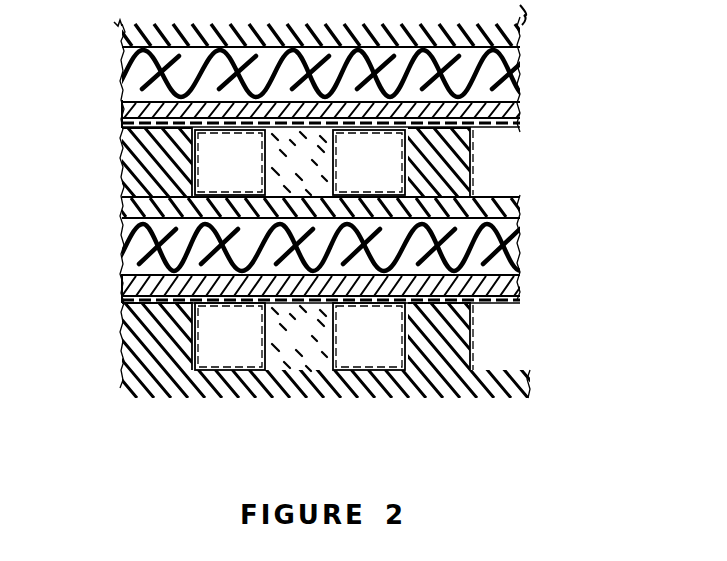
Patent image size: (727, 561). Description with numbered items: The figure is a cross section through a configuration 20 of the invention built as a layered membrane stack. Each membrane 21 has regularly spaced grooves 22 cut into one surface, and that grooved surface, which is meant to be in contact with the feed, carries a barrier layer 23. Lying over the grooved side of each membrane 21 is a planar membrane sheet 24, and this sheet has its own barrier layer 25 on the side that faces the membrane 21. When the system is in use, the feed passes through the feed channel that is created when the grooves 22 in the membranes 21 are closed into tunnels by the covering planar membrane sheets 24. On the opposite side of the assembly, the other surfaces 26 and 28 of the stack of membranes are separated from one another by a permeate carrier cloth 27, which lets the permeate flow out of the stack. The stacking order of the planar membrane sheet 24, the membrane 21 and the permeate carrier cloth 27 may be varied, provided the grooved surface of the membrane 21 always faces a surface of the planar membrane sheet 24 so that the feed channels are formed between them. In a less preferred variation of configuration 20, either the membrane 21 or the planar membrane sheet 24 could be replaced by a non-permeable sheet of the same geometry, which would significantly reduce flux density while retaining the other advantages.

The configuration 20 is at (321, 465).
The membrane 21 is at (145, 185).
The grooves 22 is at (362, 153).
The barrier layer 23 is at (299, 260).
The planar membrane sheet 24 is at (128, 111).
The barrier layer 25 is at (508, 123).
The other surface 26 is at (520, 111).
The permeate carrier cloth 27 is at (495, 70).
The other surface 28 is at (505, 33).